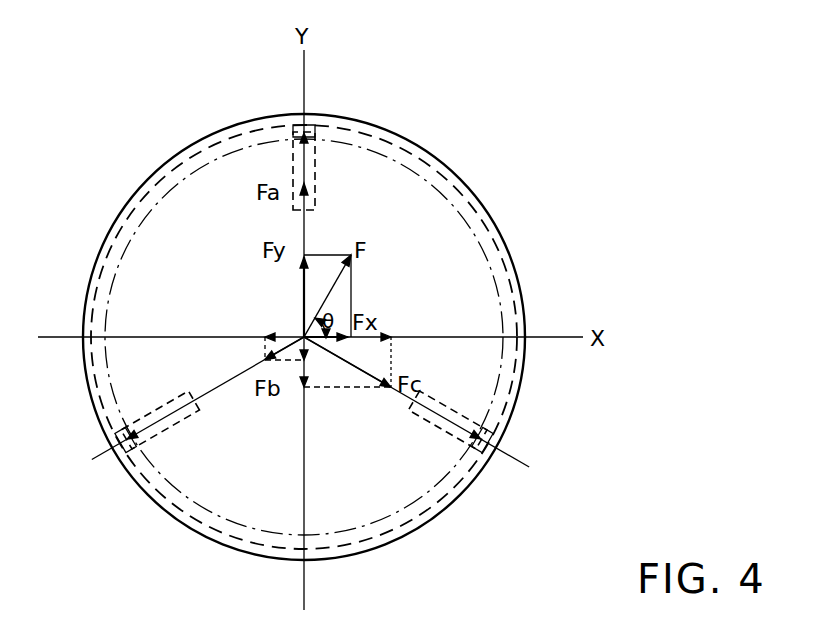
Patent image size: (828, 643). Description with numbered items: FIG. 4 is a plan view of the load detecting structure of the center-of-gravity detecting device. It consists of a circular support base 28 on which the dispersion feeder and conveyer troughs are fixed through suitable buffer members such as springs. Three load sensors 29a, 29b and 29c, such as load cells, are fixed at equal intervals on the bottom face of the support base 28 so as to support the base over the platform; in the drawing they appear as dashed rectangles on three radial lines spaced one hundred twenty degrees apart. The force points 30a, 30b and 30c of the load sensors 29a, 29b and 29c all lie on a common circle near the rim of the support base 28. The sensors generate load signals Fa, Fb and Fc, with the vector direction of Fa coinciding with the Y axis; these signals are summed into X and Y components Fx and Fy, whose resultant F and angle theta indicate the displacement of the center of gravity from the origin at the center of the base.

The circular support base 28 is at (461, 179).
The load sensor 29a is at (316, 170).
The load sensor 29b is at (176, 421).
The load sensor 29c is at (434, 425).
The force point 30a is at (292, 131).
The force point 30b is at (124, 436).
The force point 30c is at (494, 437).